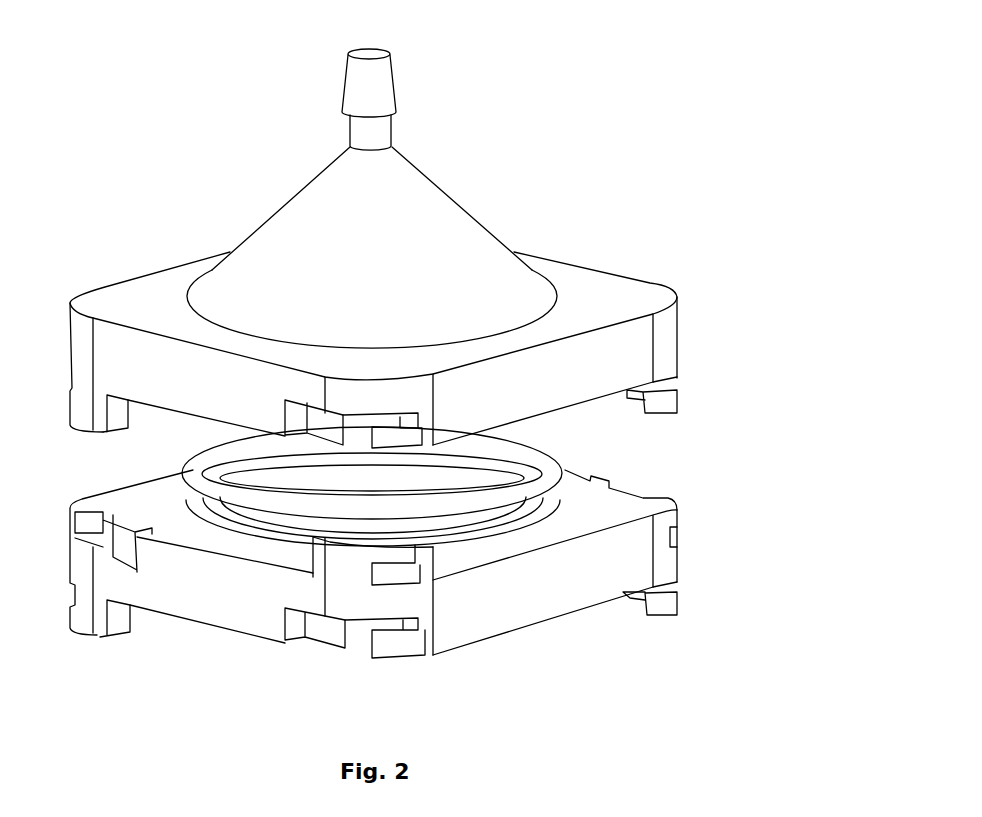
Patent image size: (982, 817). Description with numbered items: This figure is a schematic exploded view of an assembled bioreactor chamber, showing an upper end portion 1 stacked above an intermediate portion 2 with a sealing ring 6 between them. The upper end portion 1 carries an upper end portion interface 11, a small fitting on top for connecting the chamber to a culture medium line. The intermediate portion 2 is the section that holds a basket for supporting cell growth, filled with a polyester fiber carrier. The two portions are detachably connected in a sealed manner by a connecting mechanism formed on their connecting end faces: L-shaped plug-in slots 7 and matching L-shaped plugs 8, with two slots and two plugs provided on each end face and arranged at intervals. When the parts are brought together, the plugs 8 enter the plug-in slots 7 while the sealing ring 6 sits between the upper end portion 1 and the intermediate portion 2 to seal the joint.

The upper end portion 1 is at (583, 303).
The intermediate portion 2 is at (538, 595).
The sealing ring 6 is at (553, 457).
The L-shaped plug-in slot 7 is at (318, 628).
The L-shaped plug 8 is at (77, 617).
The upper end portion interface 11 is at (373, 88).